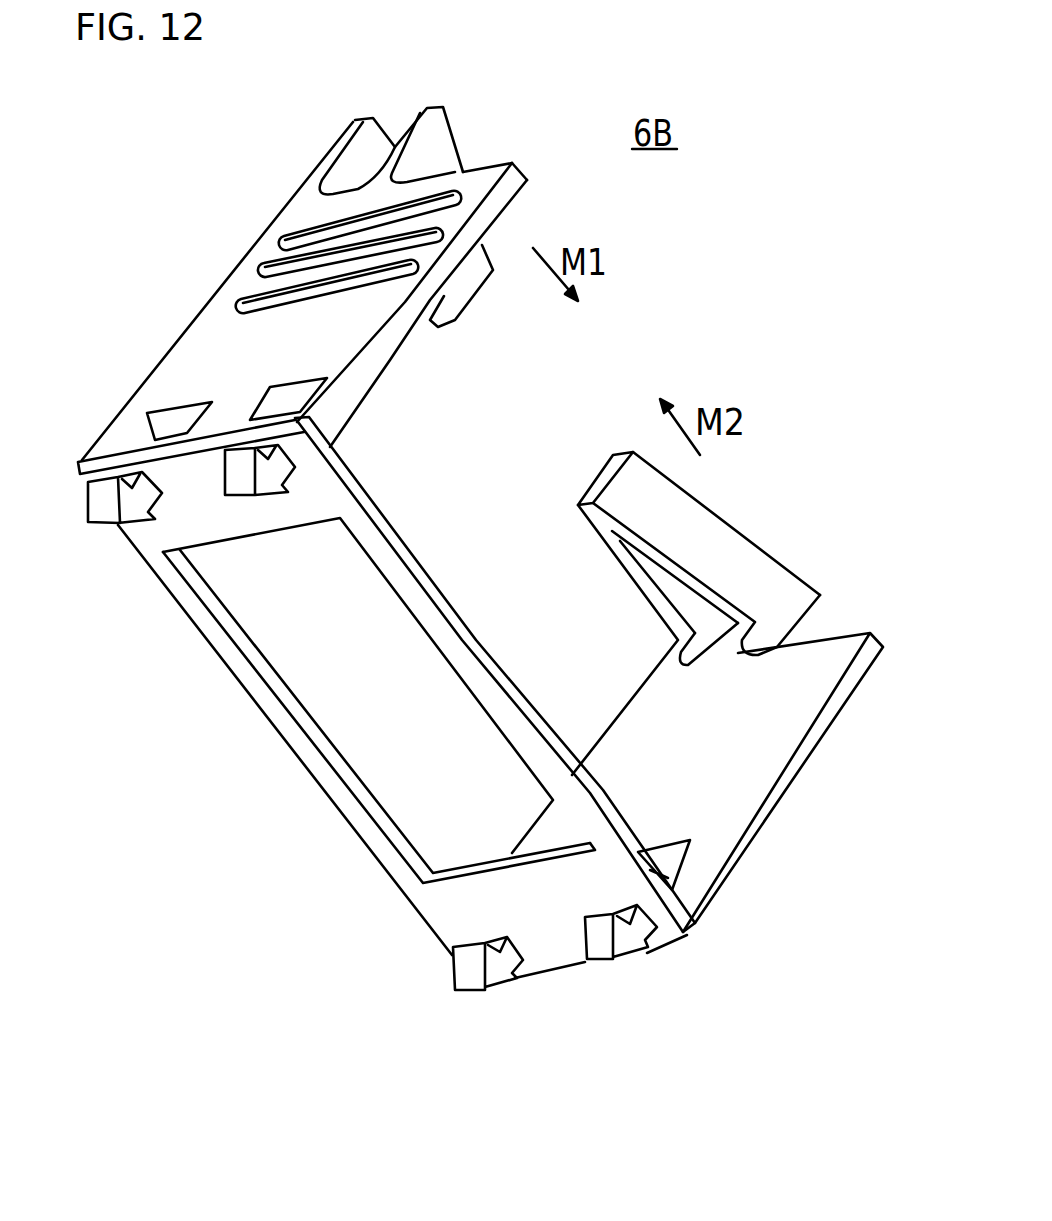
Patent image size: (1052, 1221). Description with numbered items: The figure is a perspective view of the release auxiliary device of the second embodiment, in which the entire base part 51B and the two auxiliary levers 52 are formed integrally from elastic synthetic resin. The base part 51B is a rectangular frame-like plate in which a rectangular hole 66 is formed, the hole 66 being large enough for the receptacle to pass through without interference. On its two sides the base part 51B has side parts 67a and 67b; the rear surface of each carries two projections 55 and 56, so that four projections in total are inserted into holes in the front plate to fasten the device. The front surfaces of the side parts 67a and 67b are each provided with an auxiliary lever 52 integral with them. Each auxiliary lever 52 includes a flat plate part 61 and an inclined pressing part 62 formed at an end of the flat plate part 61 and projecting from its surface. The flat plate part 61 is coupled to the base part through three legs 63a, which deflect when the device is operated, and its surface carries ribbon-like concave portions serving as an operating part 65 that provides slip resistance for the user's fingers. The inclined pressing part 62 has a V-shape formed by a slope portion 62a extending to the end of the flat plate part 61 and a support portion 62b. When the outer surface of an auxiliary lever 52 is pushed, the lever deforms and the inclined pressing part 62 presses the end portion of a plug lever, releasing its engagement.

The base part 51B is at (277, 722).
The auxiliary lever 52 is at (148, 250).
The projection 55 is at (92, 505).
The projection 56 is at (238, 473).
The flat plate part 61 is at (233, 295).
The inclined pressing part 62 is at (350, 163).
The slope portion 62a is at (467, 287).
The support portion 62b is at (637, 582).
The leg 63a is at (115, 443).
The operating part 65 is at (430, 187).
The rectangular hole 66 is at (385, 762).
The side part 67a is at (187, 466).
The side part 67b is at (552, 942).